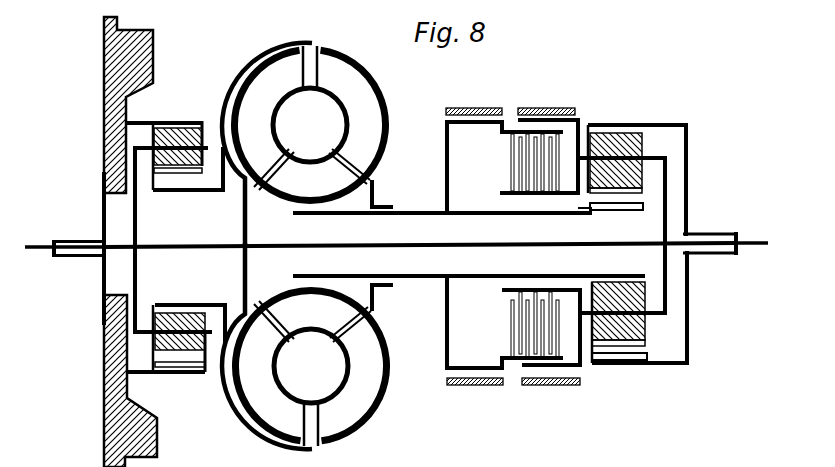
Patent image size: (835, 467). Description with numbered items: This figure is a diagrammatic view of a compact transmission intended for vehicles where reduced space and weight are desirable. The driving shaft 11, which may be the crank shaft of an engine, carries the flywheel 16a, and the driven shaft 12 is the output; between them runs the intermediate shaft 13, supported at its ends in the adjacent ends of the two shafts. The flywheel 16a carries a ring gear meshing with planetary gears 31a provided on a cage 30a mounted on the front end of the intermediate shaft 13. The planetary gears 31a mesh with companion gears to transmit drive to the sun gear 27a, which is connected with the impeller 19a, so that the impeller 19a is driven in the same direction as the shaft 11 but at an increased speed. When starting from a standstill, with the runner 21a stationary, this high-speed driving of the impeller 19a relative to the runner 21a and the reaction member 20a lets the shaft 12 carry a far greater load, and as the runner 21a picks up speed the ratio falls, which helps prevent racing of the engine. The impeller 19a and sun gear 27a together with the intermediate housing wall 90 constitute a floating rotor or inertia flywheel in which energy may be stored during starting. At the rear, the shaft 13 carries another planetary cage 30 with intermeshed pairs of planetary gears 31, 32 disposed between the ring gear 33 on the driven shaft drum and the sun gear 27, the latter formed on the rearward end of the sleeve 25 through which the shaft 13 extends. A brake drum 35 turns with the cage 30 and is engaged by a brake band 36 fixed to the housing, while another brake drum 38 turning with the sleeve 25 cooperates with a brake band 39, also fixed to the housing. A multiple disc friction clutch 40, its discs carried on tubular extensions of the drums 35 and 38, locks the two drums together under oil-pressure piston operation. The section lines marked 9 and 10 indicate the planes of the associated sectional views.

The driving shaft 11 is at (37, 238).
The driven shaft 12 is at (759, 238).
The intermediate shaft 13 is at (404, 243).
The flywheel 16a is at (103, 103).
The planetary gears 31a is at (152, 139).
The section line 9 is at (177, 118).
The ring gear 33 is at (180, 122).
The sun gear 27a is at (188, 192).
The cage 30a is at (138, 222).
The intermediate housing wall 90 is at (246, 68).
The impeller 19a is at (380, 97).
The reaction member 20a is at (342, 171).
The runner 21a is at (260, 157).
The brake drum 38 is at (446, 186).
The brake band 39 is at (475, 106).
The brake band 36 is at (545, 106).
The multiple disc friction clutch 40 is at (508, 163).
The sleeve 25 is at (465, 211).
The brake drum 35 is at (581, 120).
The section line 10 is at (603, 102).
The planetary gears 31 is at (632, 146).
The planetary gears 32 is at (640, 327).
The planetary cage 30 is at (666, 203).
The sun gear 27 is at (605, 217).